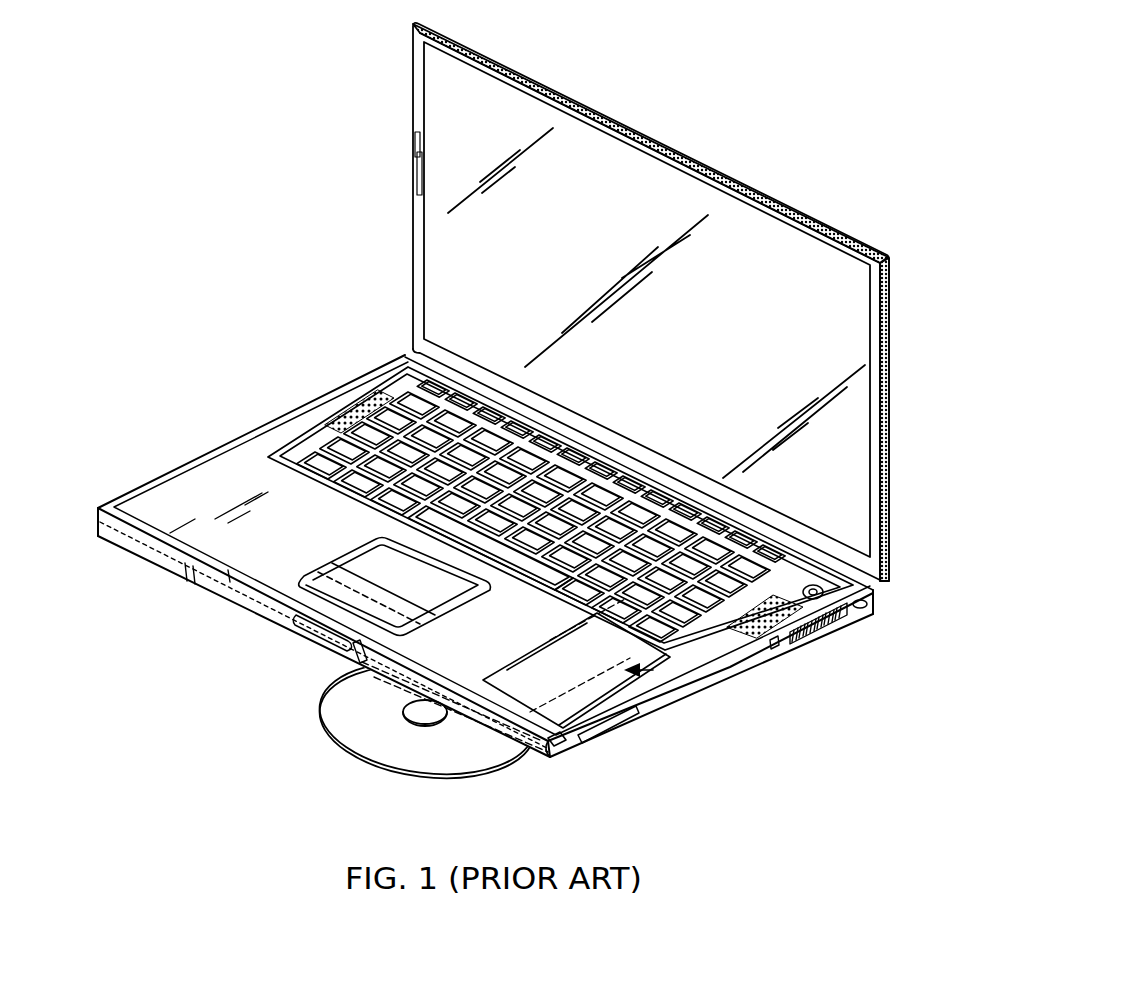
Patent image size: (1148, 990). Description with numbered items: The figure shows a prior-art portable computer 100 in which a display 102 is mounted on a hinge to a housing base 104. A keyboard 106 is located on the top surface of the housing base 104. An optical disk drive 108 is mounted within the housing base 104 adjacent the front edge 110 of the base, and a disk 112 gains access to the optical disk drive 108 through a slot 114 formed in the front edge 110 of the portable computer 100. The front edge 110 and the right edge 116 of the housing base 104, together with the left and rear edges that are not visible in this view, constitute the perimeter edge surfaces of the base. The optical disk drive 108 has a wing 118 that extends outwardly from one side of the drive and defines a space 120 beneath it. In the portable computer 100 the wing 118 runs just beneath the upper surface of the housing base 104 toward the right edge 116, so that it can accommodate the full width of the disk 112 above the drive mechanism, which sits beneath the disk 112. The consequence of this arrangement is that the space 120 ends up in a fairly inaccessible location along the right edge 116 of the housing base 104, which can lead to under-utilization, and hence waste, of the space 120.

The portable computer 100 is at (300, 140).
The display 102 is at (478, 278).
The housing base 104 is at (252, 466).
The keyboard 106 is at (313, 456).
The optical disk drive 108 is at (717, 690).
The front edge 110 is at (285, 614).
The disk 112 is at (352, 697).
The slot 114 is at (523, 733).
The right edge 116 is at (733, 668).
The wing 118 is at (680, 710).
The space 120 is at (570, 765).